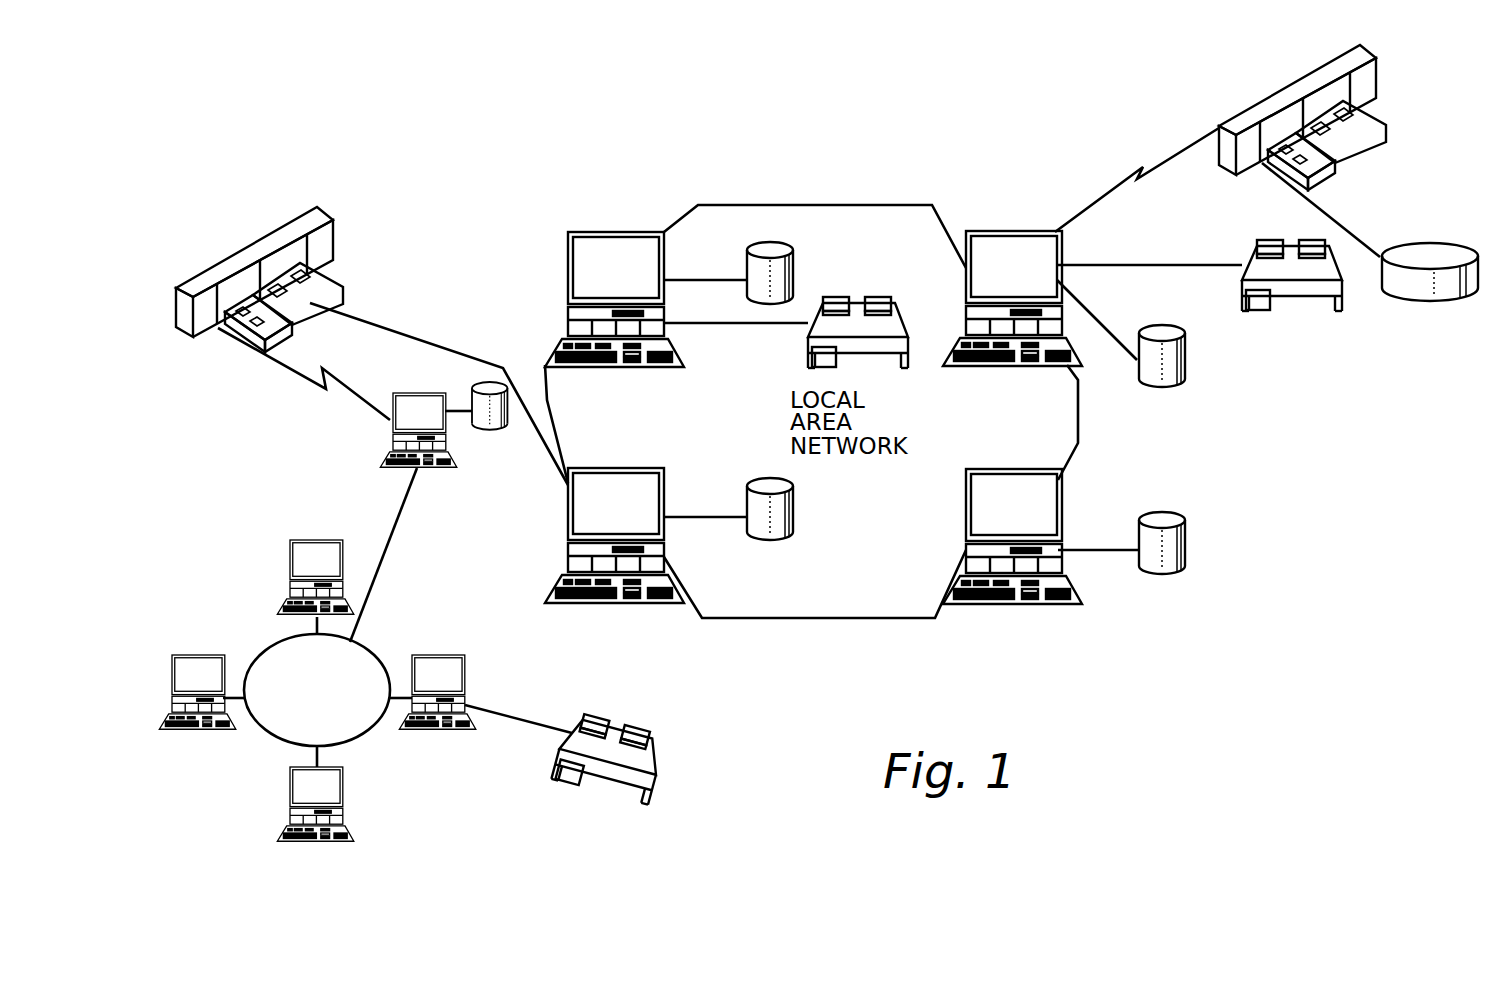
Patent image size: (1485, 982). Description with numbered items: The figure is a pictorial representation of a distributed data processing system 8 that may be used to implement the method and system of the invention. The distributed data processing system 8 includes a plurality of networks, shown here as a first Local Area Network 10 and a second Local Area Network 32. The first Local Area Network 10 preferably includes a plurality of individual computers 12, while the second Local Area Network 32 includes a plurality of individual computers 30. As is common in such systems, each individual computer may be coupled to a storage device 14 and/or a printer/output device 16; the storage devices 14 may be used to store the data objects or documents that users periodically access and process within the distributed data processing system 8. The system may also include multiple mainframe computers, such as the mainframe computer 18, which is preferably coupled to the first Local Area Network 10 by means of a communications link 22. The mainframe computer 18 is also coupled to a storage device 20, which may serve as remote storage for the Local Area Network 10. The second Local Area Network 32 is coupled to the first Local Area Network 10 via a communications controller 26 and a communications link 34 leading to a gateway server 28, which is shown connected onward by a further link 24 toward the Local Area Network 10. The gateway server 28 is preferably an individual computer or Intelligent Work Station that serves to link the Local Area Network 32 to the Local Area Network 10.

The distributed data processing system 8 is at (846, 168).
The Local Area Network 10 is at (842, 620).
The individual computers 12 is at (636, 232).
The storage device 14 is at (794, 262).
The printer/output device 16 is at (857, 300).
The mainframe computer 18 is at (1292, 84).
The storage device 20 is at (1452, 248).
The communications link 22 is at (1176, 156).
The communication link 24 is at (423, 340).
The communications controller 26 is at (327, 215).
The gateway server 28 is at (418, 393).
The individual computers 30 is at (330, 540).
The Local Area Network 32 is at (268, 735).
The communications link 34 is at (345, 388).